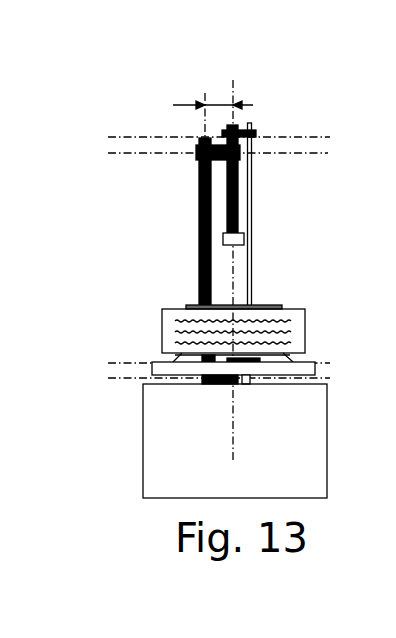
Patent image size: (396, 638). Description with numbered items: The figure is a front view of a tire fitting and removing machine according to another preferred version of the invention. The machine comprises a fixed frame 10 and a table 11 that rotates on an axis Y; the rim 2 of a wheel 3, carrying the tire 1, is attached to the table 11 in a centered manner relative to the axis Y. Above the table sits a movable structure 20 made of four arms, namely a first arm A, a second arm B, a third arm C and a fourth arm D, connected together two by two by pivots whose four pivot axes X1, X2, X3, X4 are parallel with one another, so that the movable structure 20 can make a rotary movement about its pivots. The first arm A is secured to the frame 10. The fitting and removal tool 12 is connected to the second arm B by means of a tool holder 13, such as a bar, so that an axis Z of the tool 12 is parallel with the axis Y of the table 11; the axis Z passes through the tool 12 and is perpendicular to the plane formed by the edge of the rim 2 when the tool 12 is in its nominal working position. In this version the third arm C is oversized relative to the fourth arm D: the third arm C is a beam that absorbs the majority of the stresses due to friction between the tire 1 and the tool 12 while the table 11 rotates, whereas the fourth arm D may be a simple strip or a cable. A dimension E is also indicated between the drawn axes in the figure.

The tire 1 is at (306, 327).
The rim 2 is at (273, 305).
The wheel 3 is at (253, 299).
The fixed frame 10 is at (317, 463).
The table 11 is at (315, 363).
The fitting and removal tool 12 is at (224, 240).
The tool holder 13 is at (227, 192).
The movable structure 20 is at (240, 186).
The first arm A is at (233, 386).
The second arm B is at (240, 144).
The third arm C is at (200, 270).
The fourth arm D is at (252, 212).
The distance E is at (213, 108).
The pivot axis X1 is at (200, 391).
The pivot axis X2 is at (200, 351).
The pivot axis X3 is at (199, 171).
The pivot axis X4 is at (200, 141).
The axis of the table Y is at (232, 479).
The axis of the tool Z is at (235, 254).